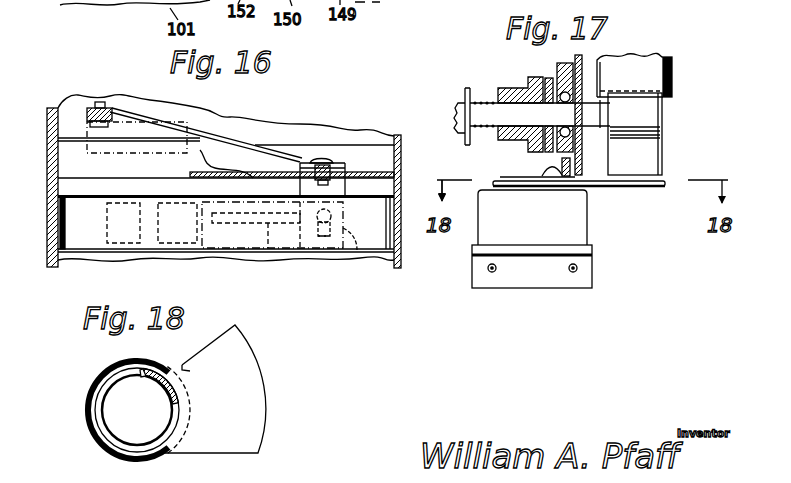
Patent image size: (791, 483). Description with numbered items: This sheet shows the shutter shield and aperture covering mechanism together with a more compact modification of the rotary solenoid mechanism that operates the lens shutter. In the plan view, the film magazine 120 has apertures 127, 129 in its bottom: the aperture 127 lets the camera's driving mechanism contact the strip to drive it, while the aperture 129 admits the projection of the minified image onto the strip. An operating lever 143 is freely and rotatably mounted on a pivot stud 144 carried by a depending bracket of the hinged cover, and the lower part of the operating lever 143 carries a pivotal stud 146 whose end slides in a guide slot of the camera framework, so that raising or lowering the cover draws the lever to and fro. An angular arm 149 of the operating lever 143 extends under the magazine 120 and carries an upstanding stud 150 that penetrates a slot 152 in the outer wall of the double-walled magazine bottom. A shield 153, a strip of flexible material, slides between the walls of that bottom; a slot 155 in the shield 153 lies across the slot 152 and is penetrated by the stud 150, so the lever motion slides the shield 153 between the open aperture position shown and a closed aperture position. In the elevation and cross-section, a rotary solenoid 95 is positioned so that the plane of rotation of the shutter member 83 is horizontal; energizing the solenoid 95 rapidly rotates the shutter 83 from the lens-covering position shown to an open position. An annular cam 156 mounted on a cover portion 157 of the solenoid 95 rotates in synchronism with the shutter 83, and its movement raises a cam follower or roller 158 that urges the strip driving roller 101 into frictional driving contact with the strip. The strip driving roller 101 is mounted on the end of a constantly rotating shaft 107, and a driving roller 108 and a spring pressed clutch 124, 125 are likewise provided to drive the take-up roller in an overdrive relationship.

In FIG. 16, the film magazine 120 is at (95, 256).
In FIG. 17, the film magazine 120 is at (677, 63).
In FIG. 16, the operating lever 143 is at (240, 142).
In FIG. 16, the pivot stud 144 is at (100, 102).
In FIG. 16, the pivotal stud 146 is at (320, 157).
In FIG. 16, the aperture 129 is at (107, 222).
In FIG. 16, the aperture 127 is at (172, 245).
In FIG. 16, the shield 153 is at (225, 247).
In FIG. 16, the slot 152 is at (268, 250).
In FIG. 16, the upstanding stud 150 is at (317, 243).
In FIG. 16, the slot 155 is at (325, 255).
In FIG. 16, the angular arm 149 is at (347, 232).
In FIG. 17, the constantly rotating shaft 107 is at (457, 105).
In FIG. 17, the spring pressed clutch 124 is at (466, 137).
In FIG. 17, the spring pressed clutch 125 is at (482, 100).
In FIG. 17, the driving roller 108 is at (532, 77).
In FIG. 17, the cam follower 158 is at (563, 64).
In FIG. 17, the strip driving roller 101 is at (650, 110).
In FIG. 17, the annular cam 156 is at (543, 167).
In FIG. 18, the annular cam 156 is at (150, 377).
In FIG. 17, the shutter member 83 is at (640, 187).
In FIG. 18, the shutter member 83 is at (252, 363).
In FIG. 17, the rotary solenoid 95 is at (493, 183).
In FIG. 18, the rotary solenoid 95 is at (103, 367).
In FIG. 18, the cover portion 157 is at (110, 413).